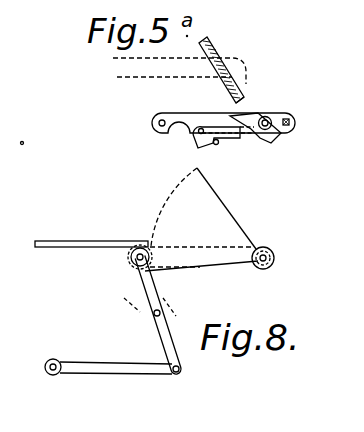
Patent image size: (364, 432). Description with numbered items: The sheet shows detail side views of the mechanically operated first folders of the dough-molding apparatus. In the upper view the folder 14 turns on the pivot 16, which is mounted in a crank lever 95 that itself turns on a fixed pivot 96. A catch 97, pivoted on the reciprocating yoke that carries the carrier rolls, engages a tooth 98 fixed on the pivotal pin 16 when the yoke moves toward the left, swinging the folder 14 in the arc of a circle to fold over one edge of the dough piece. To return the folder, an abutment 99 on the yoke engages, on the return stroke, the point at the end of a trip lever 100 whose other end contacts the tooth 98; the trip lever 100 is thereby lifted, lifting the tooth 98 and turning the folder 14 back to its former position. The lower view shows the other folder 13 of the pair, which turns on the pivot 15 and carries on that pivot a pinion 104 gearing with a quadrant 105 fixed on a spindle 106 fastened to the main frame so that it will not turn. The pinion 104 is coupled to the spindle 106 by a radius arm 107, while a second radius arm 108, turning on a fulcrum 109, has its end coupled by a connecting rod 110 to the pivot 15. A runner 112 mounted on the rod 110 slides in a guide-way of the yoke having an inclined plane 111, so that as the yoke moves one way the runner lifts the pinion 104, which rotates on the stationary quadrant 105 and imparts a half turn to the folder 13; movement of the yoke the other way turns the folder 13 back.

In FIG. 5A, the folder 14 is at (207, 47).
In FIG. 5A, the crank lever 95 is at (176, 114).
In FIG. 5A, the fixed pivot 96 is at (163, 141).
In FIG. 5A, the catch 97 is at (216, 115).
In FIG. 5A, the tooth 98 is at (244, 112).
In FIG. 5A, the pivot 16 is at (272, 116).
In FIG. 5A, the trip lever 100 is at (233, 136).
In FIG. 5A, the abutment 99 is at (24, 144).
In FIG. 8, the folder 13 is at (58, 248).
In FIG. 8, the pivot 15 is at (138, 247).
In FIG. 8, the pinion 104 is at (128, 258).
In FIG. 8, the quadrant 105 is at (176, 191).
In FIG. 8, the spindle 106 is at (290, 240).
In FIG. 8, the radius arm 107 is at (181, 245).
In FIG. 8, the second radius arm 108 is at (123, 366).
In FIG. 8, the fulcrum 109 is at (54, 370).
In FIG. 8, the connecting rod 110 is at (176, 353).
In FIG. 8, the inclined plane 111 is at (138, 298).
In FIG. 8, the runner 112 is at (154, 316).